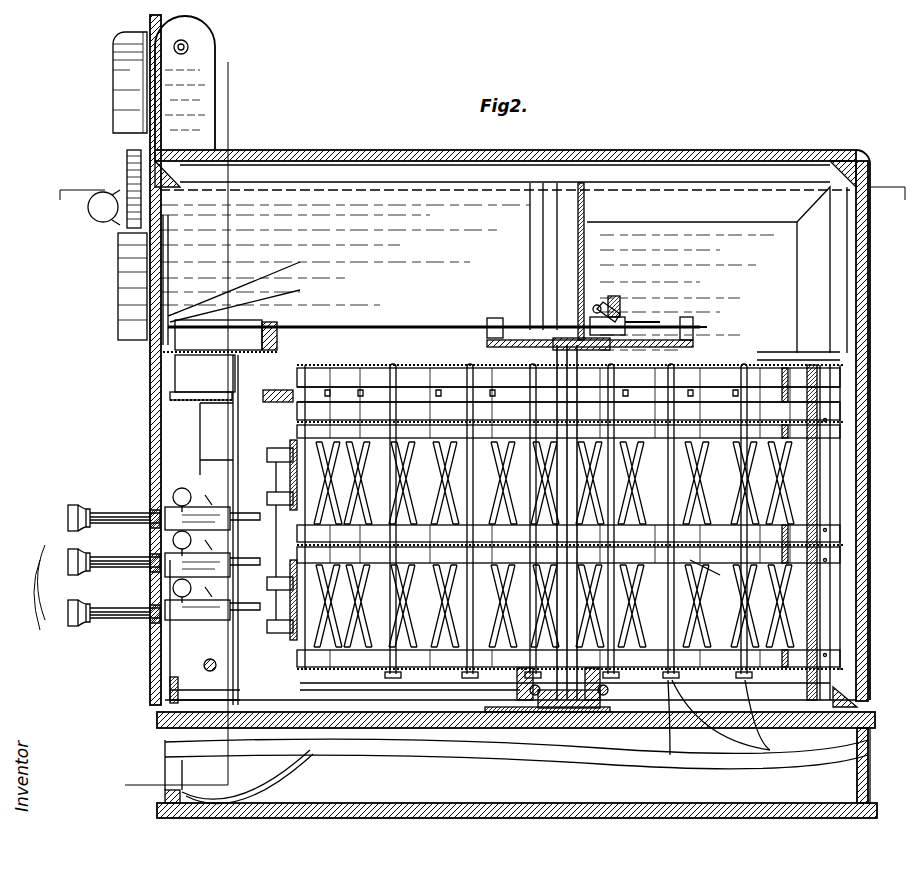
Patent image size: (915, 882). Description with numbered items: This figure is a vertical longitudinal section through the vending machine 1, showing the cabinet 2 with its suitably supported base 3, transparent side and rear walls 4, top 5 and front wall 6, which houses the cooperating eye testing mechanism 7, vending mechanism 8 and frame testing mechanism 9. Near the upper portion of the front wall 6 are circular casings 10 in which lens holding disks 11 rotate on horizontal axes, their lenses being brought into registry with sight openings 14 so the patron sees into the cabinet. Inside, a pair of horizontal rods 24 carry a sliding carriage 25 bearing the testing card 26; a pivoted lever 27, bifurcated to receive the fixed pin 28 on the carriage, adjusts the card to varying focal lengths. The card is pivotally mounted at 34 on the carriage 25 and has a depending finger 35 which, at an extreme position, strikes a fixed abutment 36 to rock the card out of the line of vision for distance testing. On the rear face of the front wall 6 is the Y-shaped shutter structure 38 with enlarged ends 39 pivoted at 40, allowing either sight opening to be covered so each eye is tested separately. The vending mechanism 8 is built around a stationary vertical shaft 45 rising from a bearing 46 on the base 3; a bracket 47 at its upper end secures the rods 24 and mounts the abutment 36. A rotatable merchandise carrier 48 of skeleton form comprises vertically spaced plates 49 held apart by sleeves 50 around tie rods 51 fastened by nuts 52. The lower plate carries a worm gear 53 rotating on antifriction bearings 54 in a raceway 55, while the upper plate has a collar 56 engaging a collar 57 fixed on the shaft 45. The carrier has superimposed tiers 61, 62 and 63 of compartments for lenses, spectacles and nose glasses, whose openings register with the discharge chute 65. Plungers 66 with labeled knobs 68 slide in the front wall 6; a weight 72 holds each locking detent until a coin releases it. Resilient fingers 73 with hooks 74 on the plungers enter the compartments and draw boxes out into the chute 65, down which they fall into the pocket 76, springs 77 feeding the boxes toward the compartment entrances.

The vending machine 1 is at (690, 150).
The cabinet 2 is at (160, 660).
The base 3 is at (128, 738).
The transparent side and rear walls 4 is at (415, 190).
The top 5 is at (598, 152).
The front wall 6 is at (156, 432).
The eye testing mechanism 7 is at (128, 345).
The vending mechanism 8 is at (405, 380).
The frame testing mechanism 9 is at (200, 107).
The circular casings 10 is at (122, 77).
The lens holding disks 11 is at (128, 220).
The sight openings 14 is at (115, 210).
The rods 24 is at (355, 326).
The carriage 25 is at (612, 320).
The card 26 is at (575, 237).
The lever 27 is at (620, 310).
The pin 28 is at (600, 305).
The pivot 34 is at (580, 312).
The finger 35 is at (650, 322).
The abutment 36 is at (640, 330).
The shutter structure 38 is at (170, 322).
The enlarged ends 39 is at (170, 243).
The pivot 40 is at (275, 300).
The shaft 45 is at (560, 712).
The bearing 46 is at (604, 712).
The bracket 47 is at (487, 322).
The merchandise carrier 48 is at (770, 352).
The plates 49 is at (840, 527).
The sleeves 50 is at (745, 592).
The tie rods 51 is at (700, 560).
The nuts 52 is at (586, 568).
The worm gear 53 is at (525, 700).
The antifriction bearings 54 is at (548, 705).
The raceway 55 is at (590, 705).
The collar 56 is at (525, 355).
The collar 57 is at (618, 394).
The upper tier of compartments 61 is at (335, 380).
The second tier of compartments 62 is at (340, 510).
The bottom tier of compartments 63 is at (345, 648).
The discharge chute 65 is at (290, 378).
The plungers 66 is at (125, 560).
The knobs 68 is at (66, 520).
The weight 72 is at (175, 490).
The resilient fingers 73 is at (213, 392).
The hooks 74 is at (288, 452).
The pocket 76 is at (185, 770).
The springs 77 is at (445, 505).